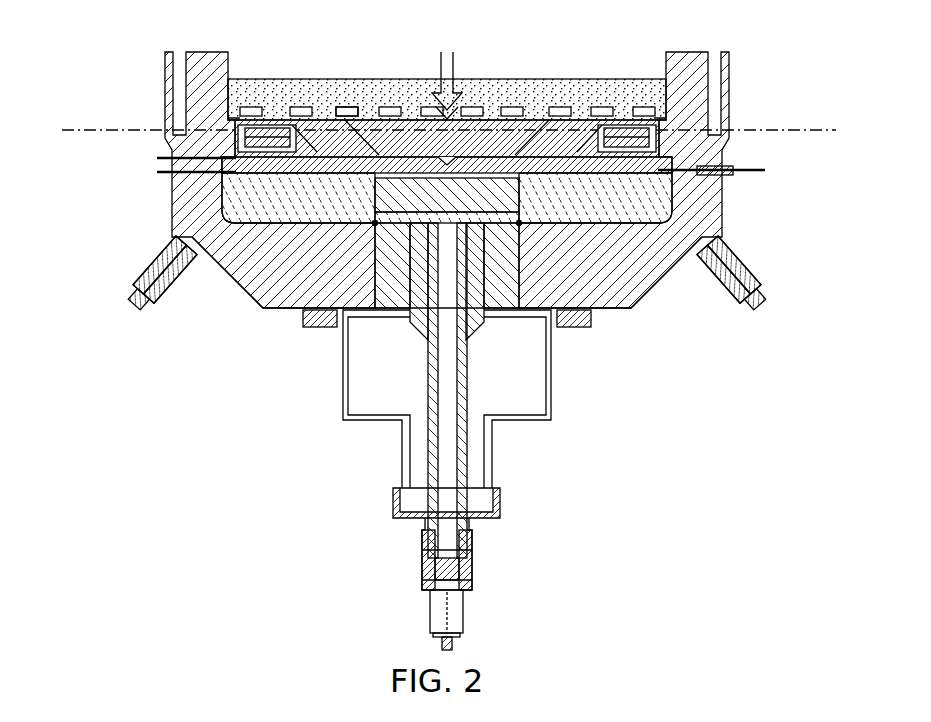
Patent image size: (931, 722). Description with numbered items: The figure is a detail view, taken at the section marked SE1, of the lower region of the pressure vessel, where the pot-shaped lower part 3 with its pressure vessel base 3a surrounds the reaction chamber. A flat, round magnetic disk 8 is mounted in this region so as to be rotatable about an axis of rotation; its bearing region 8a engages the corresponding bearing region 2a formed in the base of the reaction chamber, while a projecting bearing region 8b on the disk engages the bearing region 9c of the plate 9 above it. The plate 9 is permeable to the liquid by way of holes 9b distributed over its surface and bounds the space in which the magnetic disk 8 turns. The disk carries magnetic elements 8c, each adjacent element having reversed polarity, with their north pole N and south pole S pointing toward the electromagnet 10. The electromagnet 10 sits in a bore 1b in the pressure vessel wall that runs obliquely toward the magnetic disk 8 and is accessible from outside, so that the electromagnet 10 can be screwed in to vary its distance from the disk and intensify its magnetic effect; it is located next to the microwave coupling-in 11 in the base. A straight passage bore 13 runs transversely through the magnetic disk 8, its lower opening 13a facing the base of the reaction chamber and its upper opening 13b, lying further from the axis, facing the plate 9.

The section line SE1 is at (62, 122).
The lower part 3 is at (726, 64).
The pressure vessel base 3a is at (272, 309).
The plate 9 is at (385, 105).
The holes 9b is at (346, 107).
The bearing region of the plate 9c is at (447, 113).
The upper opening of the passage bore 13b is at (330, 107).
The bearing region of the magnetic disk 8b is at (458, 100).
The magnetic elements 8c is at (283, 117).
The magnetic disk 8 is at (226, 136).
The bearing region of the magnetic disk 8a is at (447, 390).
The passage bore 13 is at (180, 176).
The lower opening of the passage bore 13a is at (218, 205).
The bearing region of the reaction chamber 2a is at (507, 240).
The microwave coupling-in 11 is at (336, 500).
The bore 1b is at (145, 268).
The electromagnet 10 is at (172, 300).
The north pole N is at (232, 157).
The south pole S is at (232, 117).